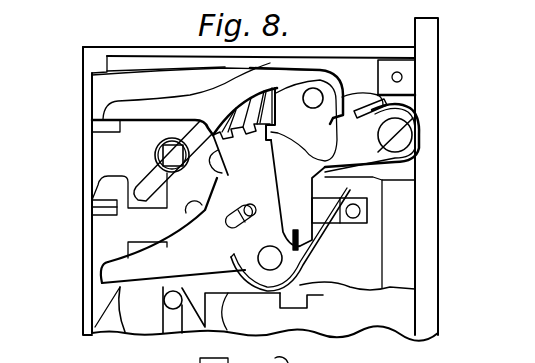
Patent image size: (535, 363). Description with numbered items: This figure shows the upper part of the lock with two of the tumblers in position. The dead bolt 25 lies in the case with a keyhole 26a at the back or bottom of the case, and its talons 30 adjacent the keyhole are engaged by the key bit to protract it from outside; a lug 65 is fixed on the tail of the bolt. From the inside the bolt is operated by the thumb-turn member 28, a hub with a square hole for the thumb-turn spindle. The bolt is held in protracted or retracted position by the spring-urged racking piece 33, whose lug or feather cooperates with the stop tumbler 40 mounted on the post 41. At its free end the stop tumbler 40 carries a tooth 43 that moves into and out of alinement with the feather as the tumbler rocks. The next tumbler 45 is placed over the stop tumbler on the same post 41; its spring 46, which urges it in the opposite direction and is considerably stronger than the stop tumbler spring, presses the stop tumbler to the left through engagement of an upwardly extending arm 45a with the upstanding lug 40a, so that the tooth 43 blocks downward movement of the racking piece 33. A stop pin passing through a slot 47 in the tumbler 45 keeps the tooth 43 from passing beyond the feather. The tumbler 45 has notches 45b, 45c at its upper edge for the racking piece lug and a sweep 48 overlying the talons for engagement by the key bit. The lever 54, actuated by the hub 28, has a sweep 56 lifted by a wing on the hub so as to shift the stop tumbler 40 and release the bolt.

The dead bolt 25 is at (403, 258).
The keyhole 26a is at (253, 40).
The thumb-turn member 28 is at (172, 161).
The talons 30 is at (102, 300).
The racking piece 33 is at (352, 130).
The stop tumbler 40 is at (296, 157).
The upstanding lug 40a is at (224, 175).
The post 41 is at (272, 260).
The tooth 43 is at (343, 90).
The tumbler 45 is at (173, 216).
The upwardly extending arm 45a is at (245, 131).
The notch 45b is at (243, 137).
The notch 45c is at (278, 125).
The spring 46 is at (320, 245).
The slot 47 is at (232, 249).
The sweep 48 is at (147, 261).
The lever 54 is at (227, 98).
The sweep 56 is at (118, 113).
The lug 65 is at (100, 208).